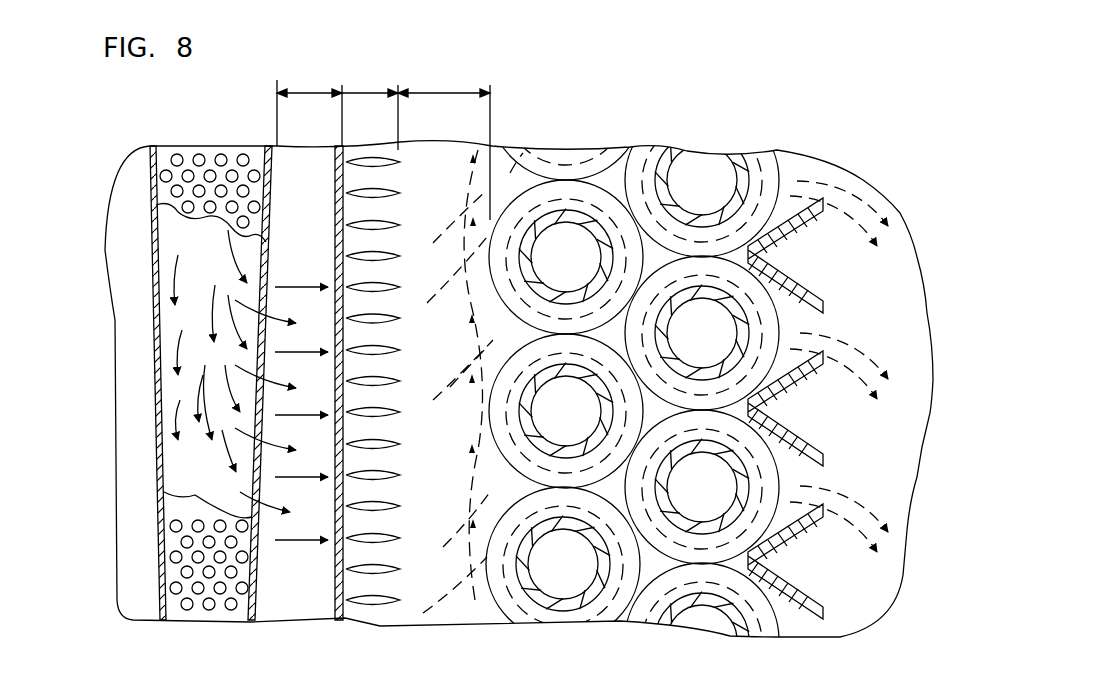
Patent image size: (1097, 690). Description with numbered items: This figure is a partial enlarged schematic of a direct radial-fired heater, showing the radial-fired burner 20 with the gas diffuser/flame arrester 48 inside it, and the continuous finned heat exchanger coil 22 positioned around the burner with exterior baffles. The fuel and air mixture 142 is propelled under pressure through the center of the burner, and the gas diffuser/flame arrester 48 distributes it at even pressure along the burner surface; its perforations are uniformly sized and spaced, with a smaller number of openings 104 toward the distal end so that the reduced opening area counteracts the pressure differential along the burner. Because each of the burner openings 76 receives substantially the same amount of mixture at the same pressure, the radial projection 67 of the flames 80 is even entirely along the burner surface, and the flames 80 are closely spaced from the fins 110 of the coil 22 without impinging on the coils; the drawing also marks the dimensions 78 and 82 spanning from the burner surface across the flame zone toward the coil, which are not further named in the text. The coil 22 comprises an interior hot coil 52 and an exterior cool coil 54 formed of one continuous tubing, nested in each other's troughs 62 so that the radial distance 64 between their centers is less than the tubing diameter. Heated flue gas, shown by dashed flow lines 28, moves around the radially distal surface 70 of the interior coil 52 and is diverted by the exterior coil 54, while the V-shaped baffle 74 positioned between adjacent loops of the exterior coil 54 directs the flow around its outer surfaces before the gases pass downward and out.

The radial-fired burner 20 is at (170, 128).
The heat exchanger coil 22 is at (702, 135).
The flow lines 28 is at (513, 152).
The gas diffuser/flame arrester 48 is at (150, 170).
The interior coil 52 is at (563, 564).
The exterior coil 54 is at (702, 487).
The troughs of interior coil 62 is at (655, 573).
The radial distance 64 is at (730, 607).
The radial projection 67 is at (385, 598).
The radially distal surface 70 is at (537, 605).
The baffle 74 is at (800, 393).
The burner openings 76 is at (342, 622).
The gap width 78 is at (372, 90).
The flames 80 is at (388, 377).
The spacing 82 is at (432, 92).
The openings 104 is at (250, 147).
The fins 110 is at (598, 185).
The fuel and air mixture 142 is at (207, 455).